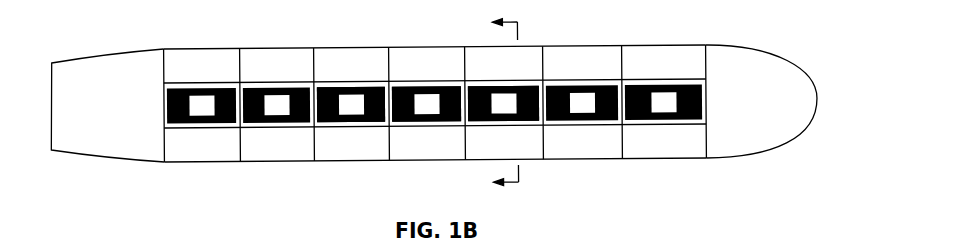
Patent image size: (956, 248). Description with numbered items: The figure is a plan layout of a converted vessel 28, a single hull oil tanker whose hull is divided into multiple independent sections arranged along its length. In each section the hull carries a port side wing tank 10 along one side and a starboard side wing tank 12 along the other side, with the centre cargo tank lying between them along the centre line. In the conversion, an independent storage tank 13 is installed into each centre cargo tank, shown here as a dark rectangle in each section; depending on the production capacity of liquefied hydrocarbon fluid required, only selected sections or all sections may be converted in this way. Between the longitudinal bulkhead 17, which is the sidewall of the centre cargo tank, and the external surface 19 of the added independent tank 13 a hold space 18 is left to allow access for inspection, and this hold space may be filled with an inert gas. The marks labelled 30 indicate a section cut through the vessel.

The port side wing tank 10 is at (435, 64).
The starboard side wing tank 12 is at (435, 143).
The independent storage tank 13 is at (434, 104).
The longitudinal bulkhead 17 is at (483, 80).
The hold space 18 is at (407, 85).
The external surface 19 is at (332, 84).
The converted vessel 28 is at (815, 93).
The section line 30 is at (516, 100).